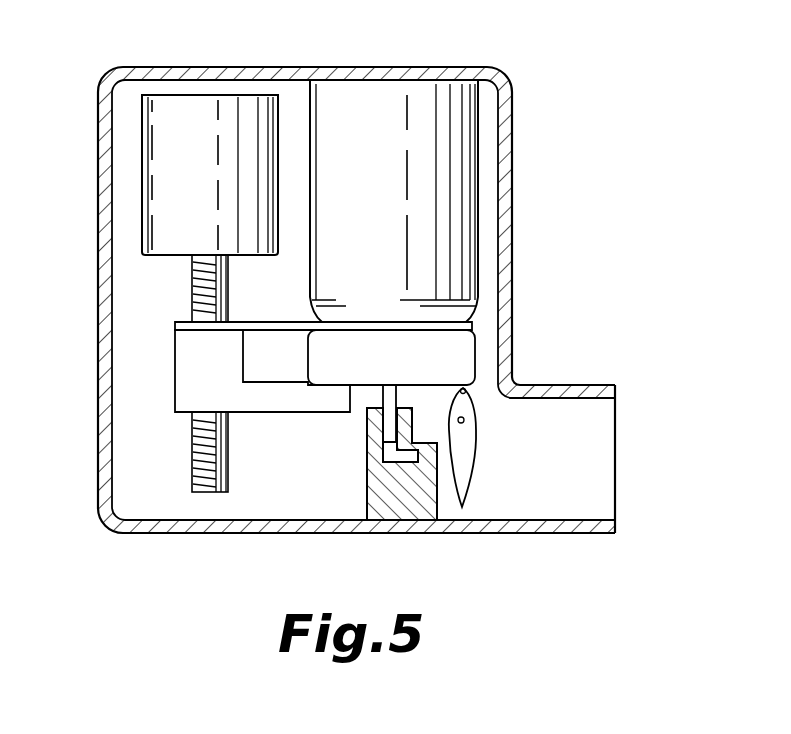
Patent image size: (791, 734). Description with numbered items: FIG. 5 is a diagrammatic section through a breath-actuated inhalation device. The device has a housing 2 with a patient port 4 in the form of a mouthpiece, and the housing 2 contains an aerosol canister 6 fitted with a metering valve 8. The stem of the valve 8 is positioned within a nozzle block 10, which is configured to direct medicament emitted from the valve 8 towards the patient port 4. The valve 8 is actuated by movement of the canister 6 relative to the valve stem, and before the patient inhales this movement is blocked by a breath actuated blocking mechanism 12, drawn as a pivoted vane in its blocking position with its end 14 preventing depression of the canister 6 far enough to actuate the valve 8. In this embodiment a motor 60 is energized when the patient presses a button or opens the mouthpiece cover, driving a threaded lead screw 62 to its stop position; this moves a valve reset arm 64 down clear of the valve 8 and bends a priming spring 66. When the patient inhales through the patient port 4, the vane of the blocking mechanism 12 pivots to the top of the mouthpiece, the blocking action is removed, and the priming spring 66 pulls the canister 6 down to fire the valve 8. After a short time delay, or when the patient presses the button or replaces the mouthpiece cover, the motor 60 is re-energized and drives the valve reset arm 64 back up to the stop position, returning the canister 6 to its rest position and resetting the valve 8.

The housing 2 is at (173, 74).
The patient port 4 is at (603, 447).
The aerosol canister 6 is at (470, 203).
The metering valve 8 is at (393, 400).
The nozzle block 10 is at (388, 512).
The breath actuated blocking mechanism 12 is at (470, 475).
The end of the vane 14 is at (464, 396).
The motor 60 is at (158, 164).
The threaded lead screw 62 is at (200, 458).
The valve reset arm 64 is at (298, 402).
The priming spring 66 is at (268, 322).